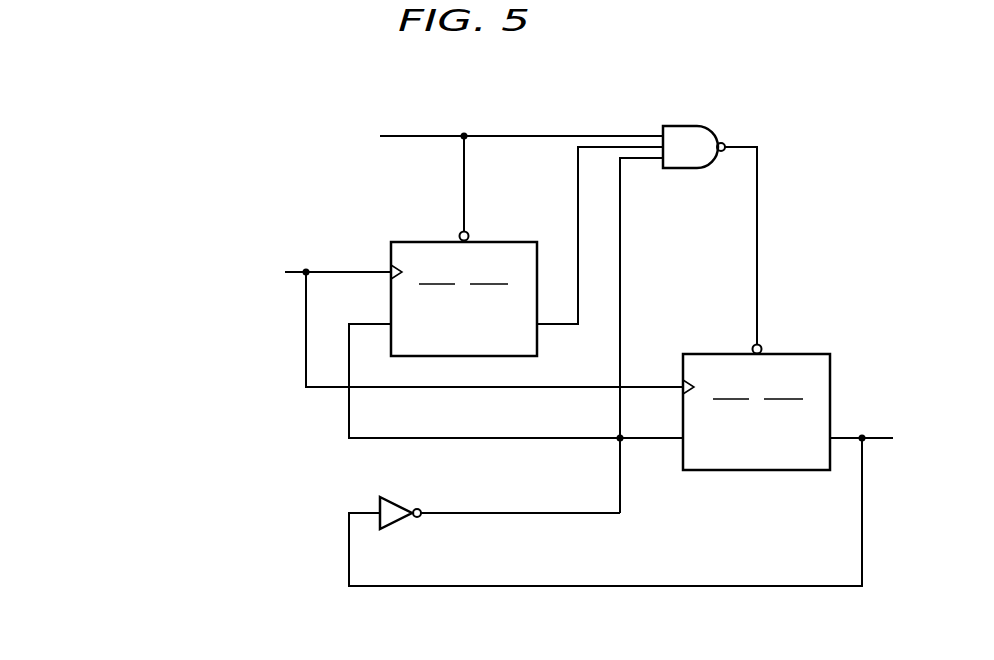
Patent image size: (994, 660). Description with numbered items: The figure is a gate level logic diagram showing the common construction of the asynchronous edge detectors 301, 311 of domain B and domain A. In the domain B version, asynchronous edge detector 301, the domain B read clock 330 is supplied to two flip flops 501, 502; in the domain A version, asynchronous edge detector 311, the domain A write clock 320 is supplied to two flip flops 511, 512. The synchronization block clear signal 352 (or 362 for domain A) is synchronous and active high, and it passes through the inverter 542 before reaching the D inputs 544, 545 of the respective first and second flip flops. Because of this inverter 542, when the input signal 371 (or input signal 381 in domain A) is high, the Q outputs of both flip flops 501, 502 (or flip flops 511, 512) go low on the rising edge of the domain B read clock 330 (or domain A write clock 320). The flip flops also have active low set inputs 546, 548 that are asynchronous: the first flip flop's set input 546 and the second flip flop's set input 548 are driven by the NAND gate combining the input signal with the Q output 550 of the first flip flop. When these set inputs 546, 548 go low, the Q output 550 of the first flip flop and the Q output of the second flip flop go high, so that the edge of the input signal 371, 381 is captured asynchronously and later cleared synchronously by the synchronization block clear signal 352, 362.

The asynchronous edge detector 301 is at (554, 281).
The asynchronous edge detector 311 is at (532, 113).
The input signal 371 is at (372, 139).
The input signal 381 is at (372, 139).
The set input 546 is at (462, 183).
The Q output 550 is at (577, 193).
The set input 548 is at (760, 207).
The flip flop 501 is at (464, 299).
The flip flop 511 is at (464, 299).
The flip flop 502 is at (756, 412).
The flip flop 512 is at (756, 412).
The domain B read clock 330 is at (212, 246).
The domain A write clock 320 is at (358, 329).
The D input 544 is at (388, 322).
The D input 545 is at (682, 437).
The inverter 542 is at (400, 525).
The synchronization block clear signal 352 is at (281, 580).
The synchronization block clear signal 362 is at (348, 548).